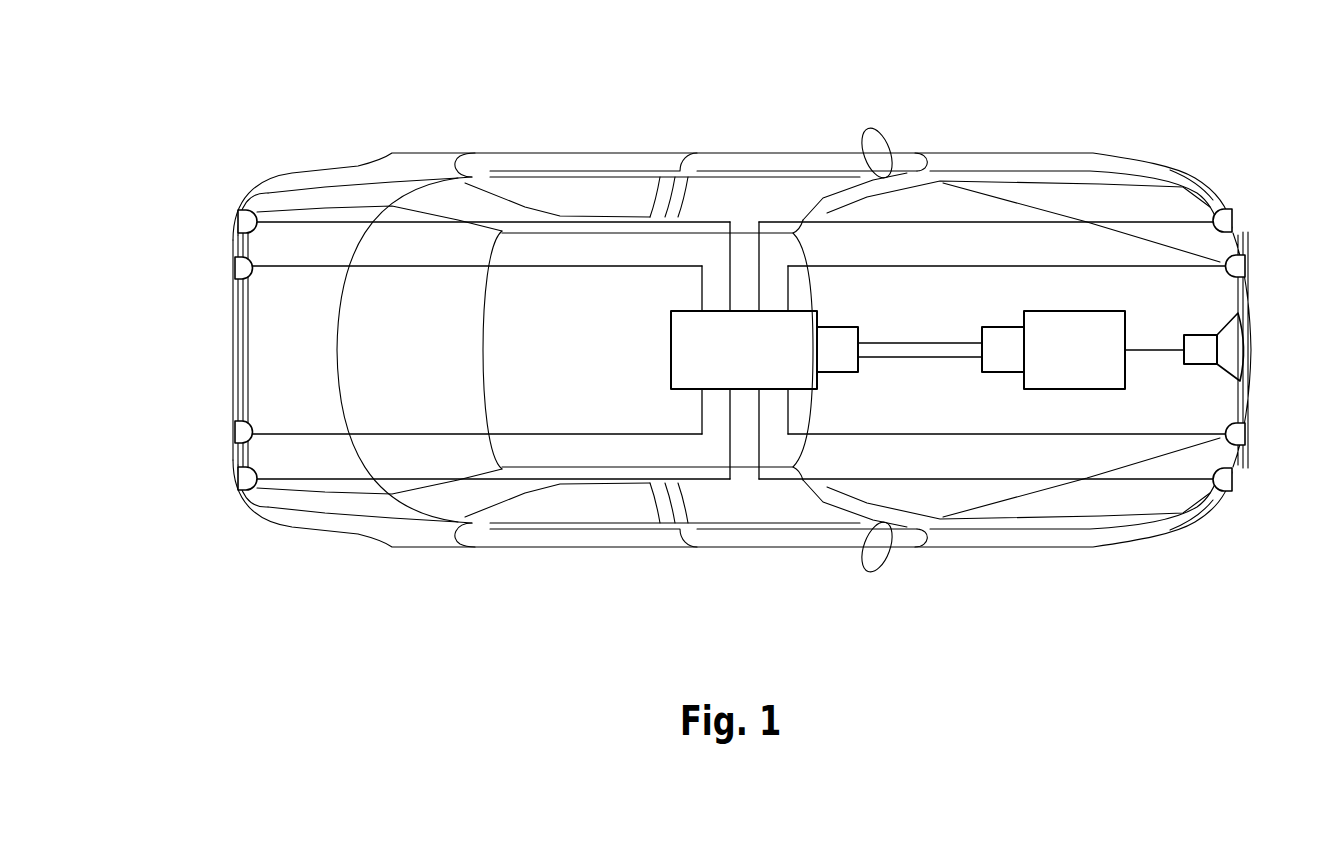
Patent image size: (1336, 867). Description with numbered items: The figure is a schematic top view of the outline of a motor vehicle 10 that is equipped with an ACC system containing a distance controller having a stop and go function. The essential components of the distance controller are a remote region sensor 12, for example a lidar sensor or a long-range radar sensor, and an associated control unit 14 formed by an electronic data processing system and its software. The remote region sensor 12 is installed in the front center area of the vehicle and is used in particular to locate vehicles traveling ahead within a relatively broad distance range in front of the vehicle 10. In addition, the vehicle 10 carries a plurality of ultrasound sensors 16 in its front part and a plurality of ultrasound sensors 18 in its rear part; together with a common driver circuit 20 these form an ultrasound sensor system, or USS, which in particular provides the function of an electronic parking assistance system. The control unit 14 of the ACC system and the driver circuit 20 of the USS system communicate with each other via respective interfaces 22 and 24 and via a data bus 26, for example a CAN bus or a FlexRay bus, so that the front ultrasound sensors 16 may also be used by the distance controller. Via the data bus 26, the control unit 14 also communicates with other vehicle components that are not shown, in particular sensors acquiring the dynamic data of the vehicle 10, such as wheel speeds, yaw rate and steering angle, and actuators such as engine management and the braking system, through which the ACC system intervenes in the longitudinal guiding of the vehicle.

The motor vehicle 10 is at (722, 166).
The remote region sensor 12 is at (1229, 347).
The control unit 14 is at (1105, 375).
The ultrasound sensors 16 is at (1236, 219).
The ultrasound sensors 18 is at (240, 479).
The driver circuit 20 is at (695, 349).
The interface 22 is at (1005, 349).
The interface 24 is at (836, 349).
The data bus 26 is at (923, 349).